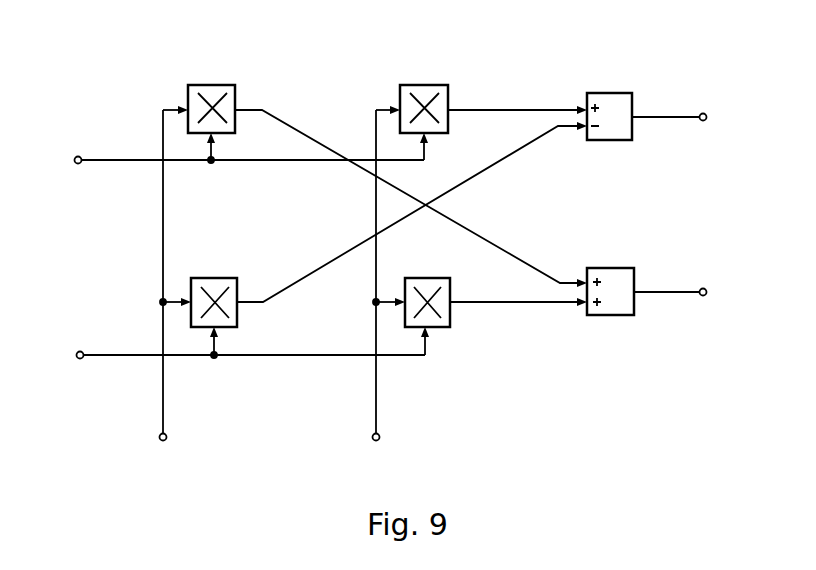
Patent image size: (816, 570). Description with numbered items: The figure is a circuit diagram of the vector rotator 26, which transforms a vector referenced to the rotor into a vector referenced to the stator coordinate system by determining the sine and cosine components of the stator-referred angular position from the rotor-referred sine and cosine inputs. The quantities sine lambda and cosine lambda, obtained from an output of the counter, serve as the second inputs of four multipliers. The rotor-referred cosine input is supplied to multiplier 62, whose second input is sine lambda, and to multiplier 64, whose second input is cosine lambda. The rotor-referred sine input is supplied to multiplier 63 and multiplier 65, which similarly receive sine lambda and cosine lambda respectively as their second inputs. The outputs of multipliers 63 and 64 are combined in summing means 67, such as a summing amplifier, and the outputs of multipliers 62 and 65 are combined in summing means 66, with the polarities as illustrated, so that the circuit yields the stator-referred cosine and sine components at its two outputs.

The vector rotator 26 is at (411, 261).
The multiplier 62 is at (211, 95).
The multiplier 63 is at (215, 288).
The multiplier 64 is at (423, 95).
The multiplier 65 is at (425, 288).
The summing means 66 is at (612, 287).
The summing means 67 is at (612, 102).